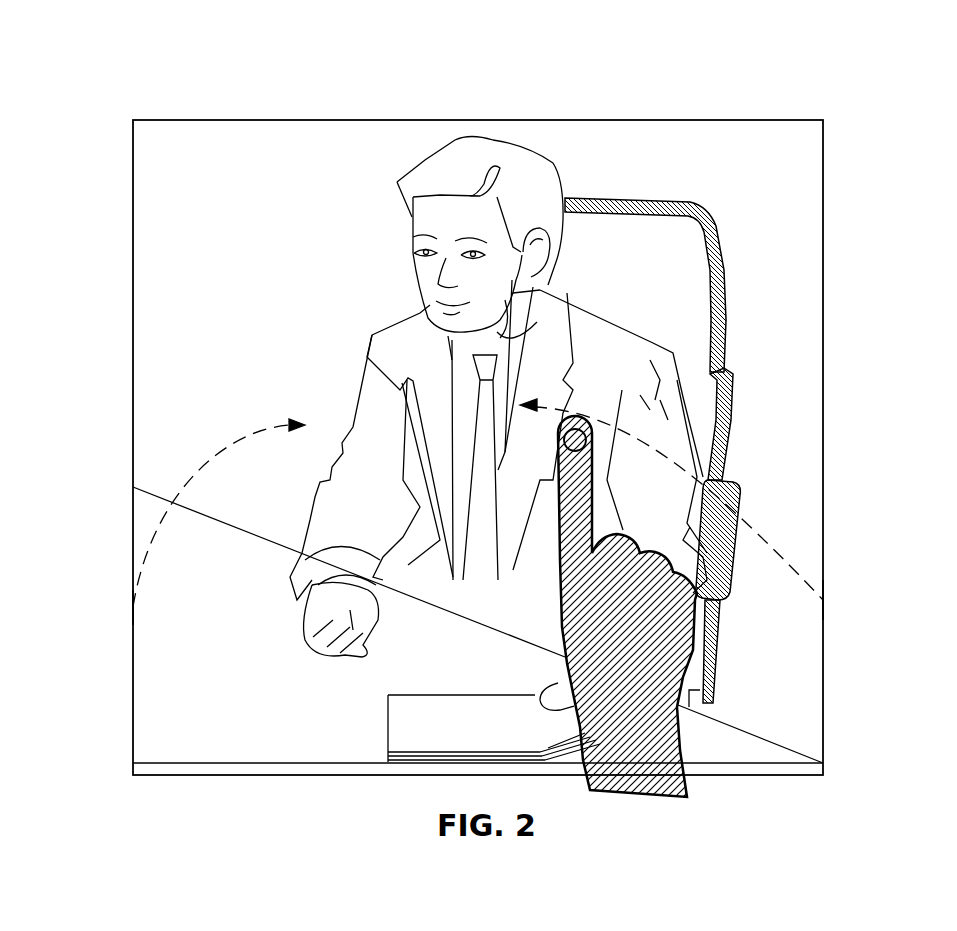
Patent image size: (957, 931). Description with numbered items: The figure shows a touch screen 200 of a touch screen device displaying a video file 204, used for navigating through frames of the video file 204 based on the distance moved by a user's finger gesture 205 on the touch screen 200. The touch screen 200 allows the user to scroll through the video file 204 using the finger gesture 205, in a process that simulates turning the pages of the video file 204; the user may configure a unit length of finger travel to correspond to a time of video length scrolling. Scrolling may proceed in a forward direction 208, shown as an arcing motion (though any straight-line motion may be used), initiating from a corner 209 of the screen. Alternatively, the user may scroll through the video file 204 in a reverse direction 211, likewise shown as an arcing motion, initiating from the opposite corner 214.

The touch screen 200 is at (158, 127).
The video file 204 is at (841, 104).
The finger gesture 205 is at (712, 815).
The forward direction 208 is at (773, 548).
The corner 209 is at (846, 594).
The reverse direction 211 is at (190, 478).
The corner 214 is at (118, 616).